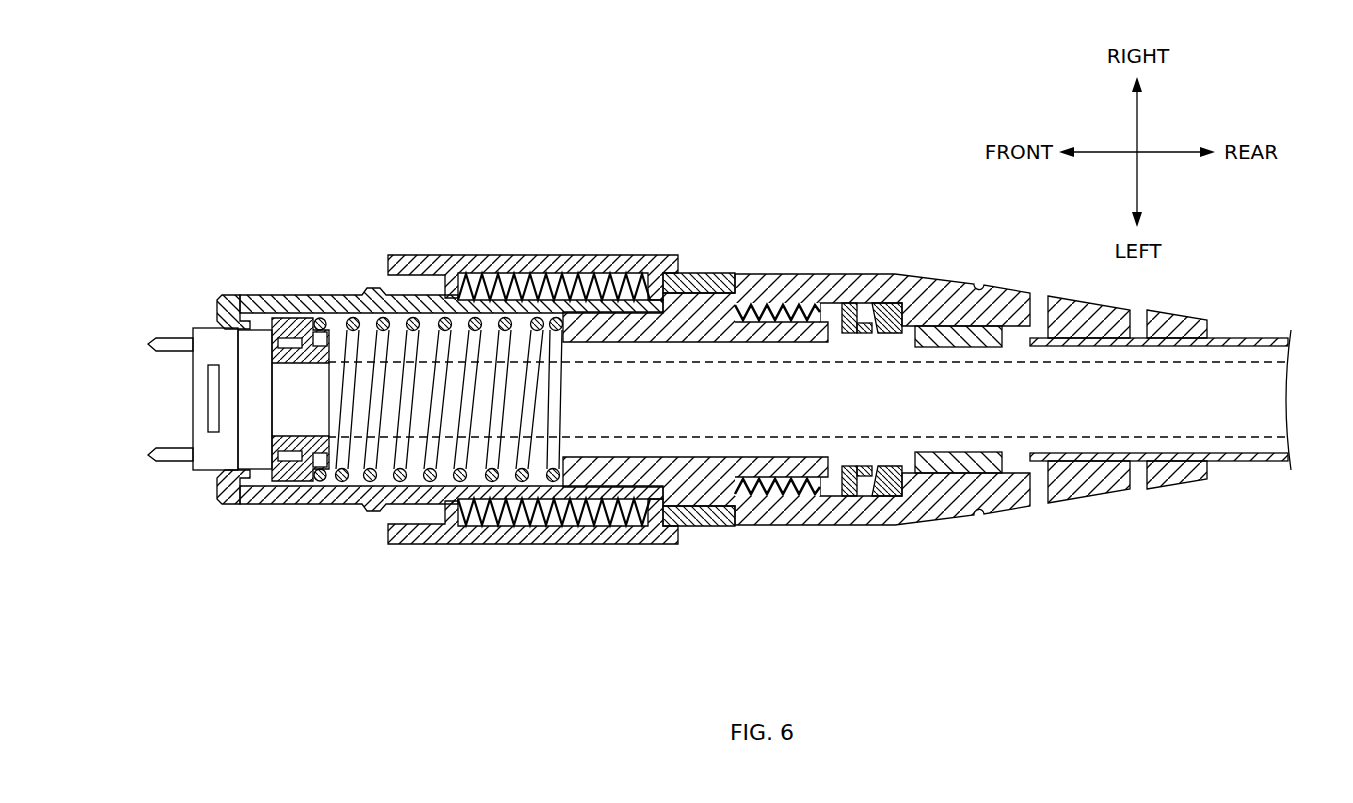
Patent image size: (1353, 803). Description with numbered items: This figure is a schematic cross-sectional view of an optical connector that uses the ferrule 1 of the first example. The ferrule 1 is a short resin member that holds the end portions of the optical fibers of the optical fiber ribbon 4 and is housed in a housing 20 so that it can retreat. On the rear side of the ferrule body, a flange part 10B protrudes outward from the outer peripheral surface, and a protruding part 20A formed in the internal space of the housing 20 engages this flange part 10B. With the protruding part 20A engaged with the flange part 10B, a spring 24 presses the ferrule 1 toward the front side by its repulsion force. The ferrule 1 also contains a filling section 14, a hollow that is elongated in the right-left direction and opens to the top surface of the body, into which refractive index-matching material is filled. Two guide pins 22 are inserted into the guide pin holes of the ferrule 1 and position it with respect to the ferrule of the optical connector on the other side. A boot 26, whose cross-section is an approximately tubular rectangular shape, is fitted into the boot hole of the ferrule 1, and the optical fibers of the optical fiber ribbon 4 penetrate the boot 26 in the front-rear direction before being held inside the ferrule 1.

The ferrule 1 is at (206, 345).
The optical fiber ribbon 4 is at (693, 438).
The flange part 10B is at (246, 313).
The filling section 14 is at (204, 397).
The housing 20 is at (700, 275).
The protruding part 20A is at (230, 302).
The guide pin 22 is at (168, 337).
The spring 24 is at (350, 483).
The boot 26 is at (286, 413).